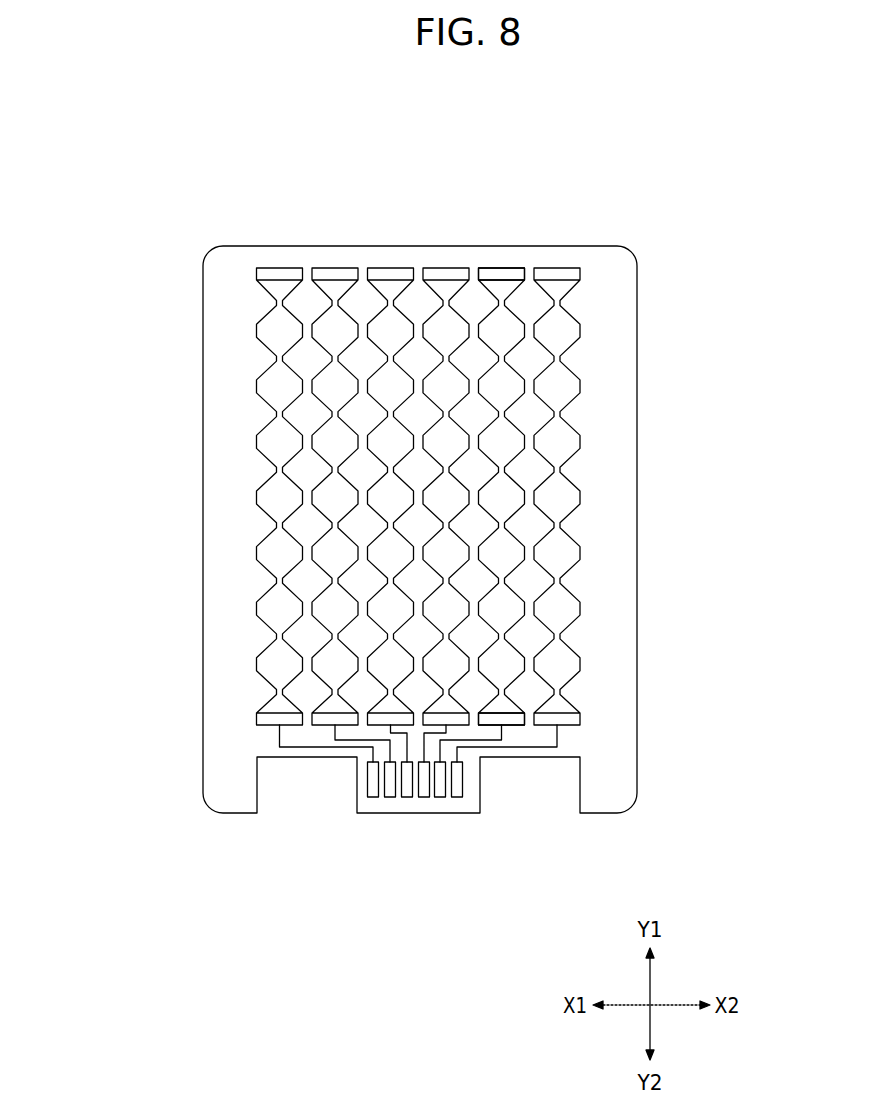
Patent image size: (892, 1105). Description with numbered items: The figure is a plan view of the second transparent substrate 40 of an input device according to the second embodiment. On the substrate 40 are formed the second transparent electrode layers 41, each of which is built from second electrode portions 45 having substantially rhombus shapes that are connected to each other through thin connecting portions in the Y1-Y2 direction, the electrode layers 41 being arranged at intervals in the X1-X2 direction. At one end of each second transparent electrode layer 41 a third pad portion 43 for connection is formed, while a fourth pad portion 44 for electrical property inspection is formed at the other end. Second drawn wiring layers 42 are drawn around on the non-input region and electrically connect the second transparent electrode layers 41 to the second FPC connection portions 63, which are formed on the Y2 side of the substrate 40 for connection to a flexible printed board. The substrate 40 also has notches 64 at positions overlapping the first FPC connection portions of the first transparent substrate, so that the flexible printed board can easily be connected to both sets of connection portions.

The second transparent substrate 40 is at (242, 493).
The second transparent electrode layer 41 is at (515, 496).
The second drawn wiring layer 42 is at (280, 738).
The third pad portion 43 is at (507, 720).
The fourth pad portion 44 is at (505, 275).
The second electrode portion 45 is at (498, 433).
The second FPC connection portion 63 is at (423, 787).
The notch 64 is at (312, 787).